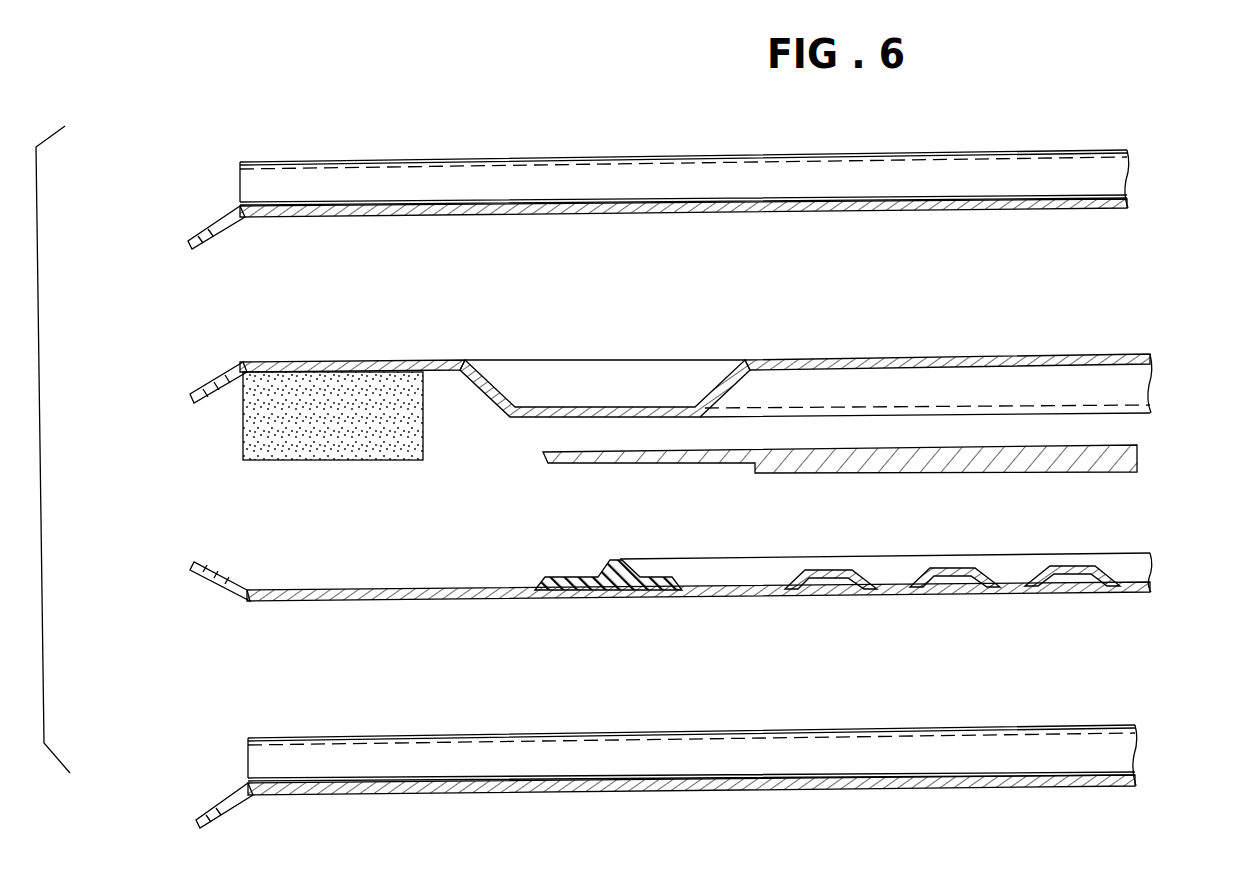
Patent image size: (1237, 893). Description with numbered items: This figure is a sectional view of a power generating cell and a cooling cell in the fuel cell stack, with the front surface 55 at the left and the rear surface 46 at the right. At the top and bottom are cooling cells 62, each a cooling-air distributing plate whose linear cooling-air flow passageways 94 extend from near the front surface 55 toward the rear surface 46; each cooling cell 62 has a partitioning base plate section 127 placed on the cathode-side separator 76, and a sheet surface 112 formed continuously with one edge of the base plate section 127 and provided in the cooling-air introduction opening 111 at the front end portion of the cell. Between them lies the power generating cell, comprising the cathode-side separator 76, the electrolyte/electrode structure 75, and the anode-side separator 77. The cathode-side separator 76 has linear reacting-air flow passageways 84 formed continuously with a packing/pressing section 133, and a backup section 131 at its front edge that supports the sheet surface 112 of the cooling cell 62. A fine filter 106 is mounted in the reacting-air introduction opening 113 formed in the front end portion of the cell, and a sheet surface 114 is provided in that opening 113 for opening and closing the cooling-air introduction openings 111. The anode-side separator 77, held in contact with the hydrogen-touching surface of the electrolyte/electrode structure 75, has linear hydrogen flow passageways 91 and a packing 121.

The rear surface 46 is at (1178, 147).
The front surface 55 is at (212, 150).
The cooling cell 62 is at (647, 459).
The electrolyte/electrode structure 75 is at (1110, 469).
The cathode-side separator 76 is at (658, 409).
The anode-side separator 77 is at (626, 577).
The reacting-air flow passageway 84 is at (866, 378).
The hydrogen flow passageway 91 is at (895, 585).
The cooling-air flow passageway 94 is at (548, 158).
The fine filter 106 is at (266, 462).
The cooling-air introduction opening 111 is at (258, 208).
The sheet surface 112 is at (215, 238).
The reacting-air introduction opening 113 is at (238, 376).
The sheet surface 114 is at (215, 585).
The packing 121 is at (602, 562).
The partitioning base plate section 127 is at (1103, 208).
The backup section 131 is at (186, 398).
The packing/pressing section 133 is at (605, 407).